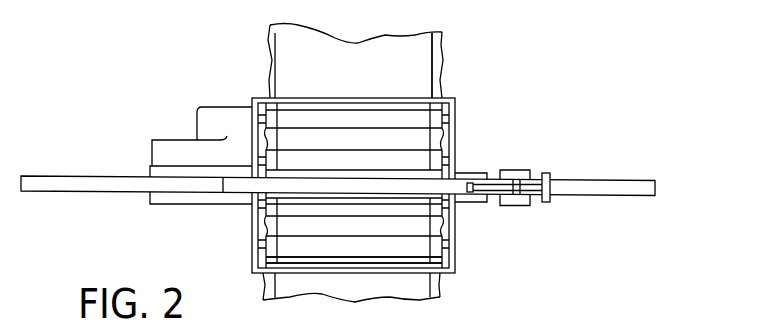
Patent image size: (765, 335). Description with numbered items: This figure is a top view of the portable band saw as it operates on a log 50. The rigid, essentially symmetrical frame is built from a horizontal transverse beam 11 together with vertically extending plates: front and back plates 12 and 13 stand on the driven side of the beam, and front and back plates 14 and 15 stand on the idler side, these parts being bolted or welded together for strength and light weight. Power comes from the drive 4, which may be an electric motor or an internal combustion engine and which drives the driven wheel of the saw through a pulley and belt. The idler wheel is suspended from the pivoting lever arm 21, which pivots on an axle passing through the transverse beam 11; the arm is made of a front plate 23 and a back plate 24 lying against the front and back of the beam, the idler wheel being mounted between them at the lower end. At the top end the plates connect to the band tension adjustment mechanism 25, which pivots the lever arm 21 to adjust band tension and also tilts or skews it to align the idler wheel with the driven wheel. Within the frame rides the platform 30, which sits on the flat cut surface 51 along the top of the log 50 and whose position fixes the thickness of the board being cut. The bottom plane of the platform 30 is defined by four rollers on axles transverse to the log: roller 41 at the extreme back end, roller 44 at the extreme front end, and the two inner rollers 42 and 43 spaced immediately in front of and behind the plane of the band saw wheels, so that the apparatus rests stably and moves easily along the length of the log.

The drive 4 is at (196, 131).
The transverse beam 11 is at (93, 176).
The front plate 12 is at (150, 205).
The back plate 13 is at (148, 168).
The front plate 14 is at (482, 206).
The back plate 15 is at (489, 173).
The pivoting lever arm 21 is at (519, 169).
The front plate 23 is at (520, 208).
The back plate 24 is at (533, 171).
The band tension adjustment mechanism 25 is at (555, 172).
The platform 30 is at (460, 103).
The roller 41 is at (311, 117).
The inner roller 42 is at (318, 160).
The inner roller 43 is at (346, 222).
The roller 44 is at (372, 255).
The log 50 is at (443, 32).
The flat cut surface 51 is at (422, 60).